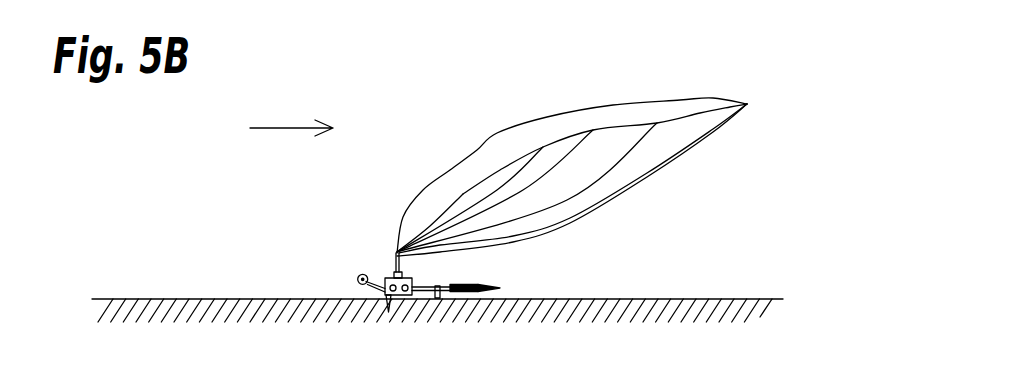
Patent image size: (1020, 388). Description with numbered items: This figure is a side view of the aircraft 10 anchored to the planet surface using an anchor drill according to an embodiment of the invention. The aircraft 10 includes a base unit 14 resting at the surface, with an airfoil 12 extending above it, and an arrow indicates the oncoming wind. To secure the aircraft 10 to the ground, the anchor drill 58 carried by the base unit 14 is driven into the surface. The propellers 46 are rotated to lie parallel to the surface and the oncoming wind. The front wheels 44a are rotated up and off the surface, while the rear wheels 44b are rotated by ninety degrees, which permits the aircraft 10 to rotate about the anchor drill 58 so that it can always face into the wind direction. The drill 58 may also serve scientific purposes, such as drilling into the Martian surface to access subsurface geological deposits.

The aircraft 10 is at (572, 143).
The leading edge spar 12 is at (636, 102).
The base unit 14 is at (388, 272).
The front wheels 44a is at (359, 274).
The rear wheels 44b is at (450, 297).
The propellers 46 is at (488, 286).
The anchor drill 58 is at (389, 302).